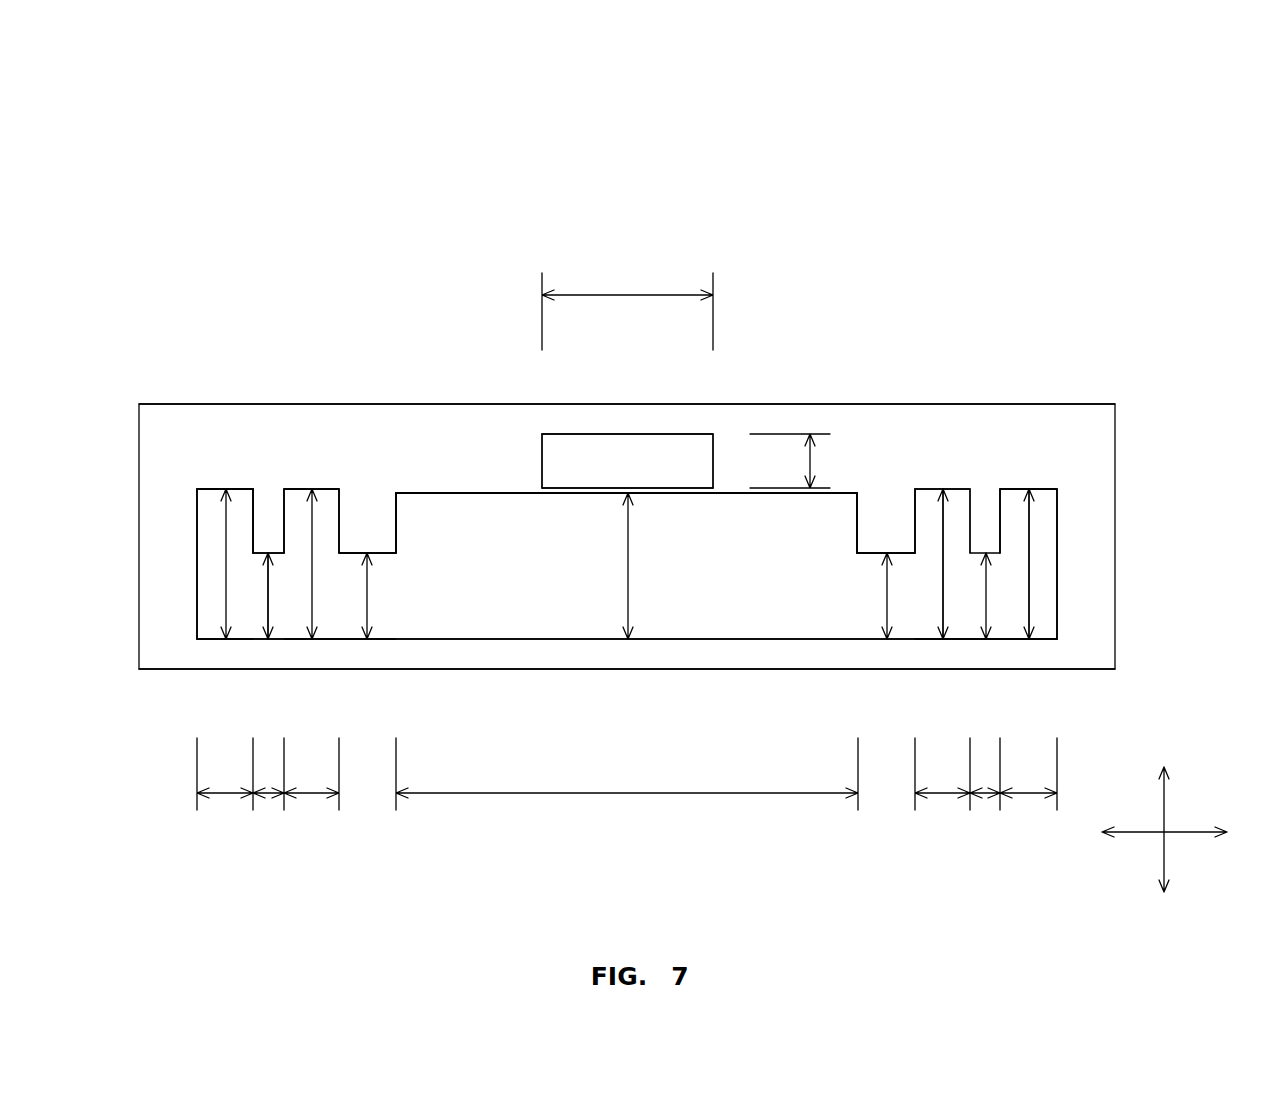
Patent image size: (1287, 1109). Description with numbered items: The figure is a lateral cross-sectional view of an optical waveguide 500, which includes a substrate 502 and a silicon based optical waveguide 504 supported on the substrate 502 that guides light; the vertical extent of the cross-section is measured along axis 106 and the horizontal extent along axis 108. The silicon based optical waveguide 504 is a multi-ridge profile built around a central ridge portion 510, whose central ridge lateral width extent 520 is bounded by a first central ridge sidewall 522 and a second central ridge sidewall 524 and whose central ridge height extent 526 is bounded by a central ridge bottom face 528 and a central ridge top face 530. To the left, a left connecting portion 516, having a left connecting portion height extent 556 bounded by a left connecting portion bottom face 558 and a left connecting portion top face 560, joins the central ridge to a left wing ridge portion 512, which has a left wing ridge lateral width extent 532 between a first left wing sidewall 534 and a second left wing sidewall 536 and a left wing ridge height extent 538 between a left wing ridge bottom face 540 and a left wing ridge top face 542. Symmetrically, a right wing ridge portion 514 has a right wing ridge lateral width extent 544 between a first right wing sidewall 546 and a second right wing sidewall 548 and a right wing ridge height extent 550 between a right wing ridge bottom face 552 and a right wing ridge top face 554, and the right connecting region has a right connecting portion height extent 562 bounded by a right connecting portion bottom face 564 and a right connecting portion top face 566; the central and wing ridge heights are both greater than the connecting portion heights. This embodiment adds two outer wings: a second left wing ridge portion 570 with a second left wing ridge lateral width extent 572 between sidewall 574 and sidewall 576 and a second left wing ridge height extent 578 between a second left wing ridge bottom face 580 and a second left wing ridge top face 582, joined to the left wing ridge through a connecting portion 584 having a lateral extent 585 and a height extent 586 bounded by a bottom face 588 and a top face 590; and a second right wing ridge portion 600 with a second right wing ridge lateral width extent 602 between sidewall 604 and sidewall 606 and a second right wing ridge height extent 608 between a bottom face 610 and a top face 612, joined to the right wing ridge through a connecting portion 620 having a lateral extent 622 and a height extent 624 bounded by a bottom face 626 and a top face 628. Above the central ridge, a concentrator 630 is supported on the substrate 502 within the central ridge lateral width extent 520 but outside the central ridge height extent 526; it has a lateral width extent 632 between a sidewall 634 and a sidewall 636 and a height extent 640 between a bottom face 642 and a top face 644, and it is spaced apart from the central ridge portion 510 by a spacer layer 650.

The optical waveguide 500 is at (823, 178).
The substrate 502 is at (1067, 657).
The silicon based optical waveguide 504 is at (699, 612).
The central ridge portion 510 is at (484, 440).
The left wing ridge portion 512 is at (325, 275).
The right wing ridge portion 514 is at (1028, 265).
The left connecting portion 516 is at (363, 330).
The central ridge lateral width extent 520 is at (633, 795).
The first central ridge sidewall 522 is at (395, 512).
The second central ridge sidewall 524 is at (860, 508).
The central ridge height extent 526 is at (640, 641).
The central ridge bottom face 528 is at (558, 640).
The central ridge top face 530 is at (445, 493).
The left wing ridge lateral width extent 532 is at (312, 795).
The first left wing sidewall 534 is at (260, 497).
The second left wing sidewall 536 is at (308, 489).
The left wing ridge height extent 538 is at (313, 587).
The left wing ridge bottom face 540 is at (313, 641).
The left wing ridge top face 542 is at (282, 513).
The right wing ridge lateral width extent 544 is at (940, 800).
The first right wing sidewall 546 is at (975, 507).
The second right wing sidewall 548 is at (912, 517).
The right wing ridge height extent 550 is at (909, 641).
The right wing ridge bottom face 552 is at (943, 641).
The right wing ridge top face 554 is at (947, 489).
The left connecting portion height extent 556 is at (368, 600).
The left connecting portion bottom face 558 is at (368, 641).
The left connecting portion top face 560 is at (366, 545).
The right connecting portion height extent 562 is at (887, 600).
The right connecting portion bottom face 564 is at (943, 587).
The right connecting portion top face 566 is at (885, 553).
The second left wing ridge portion 570 is at (246, 522).
The second left wing ridge lateral width extent 572 is at (228, 795).
The sidewall 574 is at (197, 503).
The sidewall 576 is at (258, 492).
The second left wing ridge height extent 578 is at (902, 330).
The second left wing ridge bottom face 580 is at (210, 640).
The second left wing ridge top face 582 is at (208, 488).
The connecting portion 584 is at (183, 325).
The lateral extent 585 is at (269, 795).
The height extent 586 is at (267, 605).
The bottom face 588 is at (265, 645).
The top face 590 is at (268, 553).
The second right wing ridge portion 600 is at (1097, 387).
The second right wing ridge lateral width extent 602 is at (1027, 798).
The sidewall 604 is at (1000, 503).
The sidewall 606 is at (1057, 507).
The second right wing ridge height extent 608 is at (987, 550).
The bottom face 610 is at (1045, 640).
The top face 612 is at (1047, 488).
The connecting portion 620 is at (1097, 323).
The lateral extent 622 is at (987, 800).
The height extent 624 is at (995, 583).
The bottom face 626 is at (985, 640).
The top face 628 is at (1038, 523).
The concentrator 630 is at (673, 325).
The lateral width extent 632 is at (630, 293).
The sidewall 634 is at (541, 453).
The sidewall 636 is at (713, 462).
The height extent 640 is at (815, 460).
The bottom face 642 is at (685, 490).
The top face 644 is at (627, 434).
The spacer layer 650 is at (534, 487).
The axis 106 is at (1165, 802).
The axis 108 is at (1190, 834).